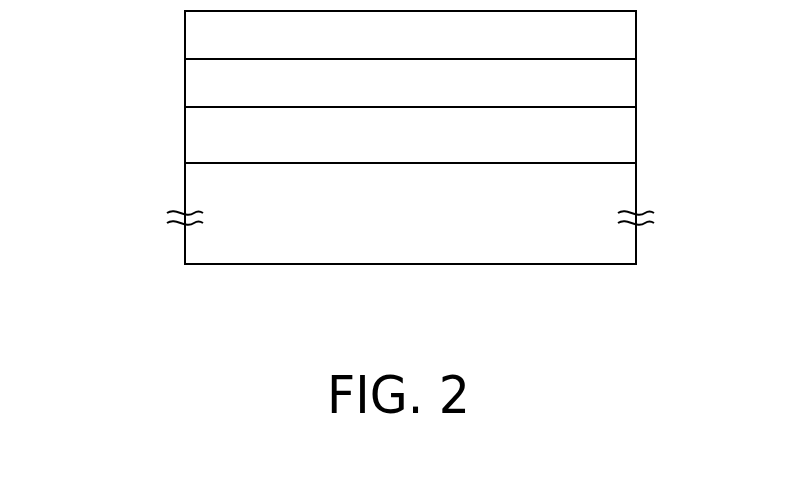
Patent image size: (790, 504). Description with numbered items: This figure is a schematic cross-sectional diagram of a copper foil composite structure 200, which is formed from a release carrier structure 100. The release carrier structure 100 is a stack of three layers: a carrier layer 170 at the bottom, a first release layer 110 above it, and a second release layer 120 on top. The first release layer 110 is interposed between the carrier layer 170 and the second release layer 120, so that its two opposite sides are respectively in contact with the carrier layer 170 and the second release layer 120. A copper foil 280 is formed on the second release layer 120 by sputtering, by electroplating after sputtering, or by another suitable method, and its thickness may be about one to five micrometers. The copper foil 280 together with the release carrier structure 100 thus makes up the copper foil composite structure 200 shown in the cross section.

The copper foil composite structure 200 is at (687, 326).
The copper foil 280 is at (197, 33).
The second release layer 120 is at (197, 82).
The first release layer 110 is at (197, 139).
The carrier layer 170 is at (197, 192).
The release carrier structure 100 is at (104, 68).